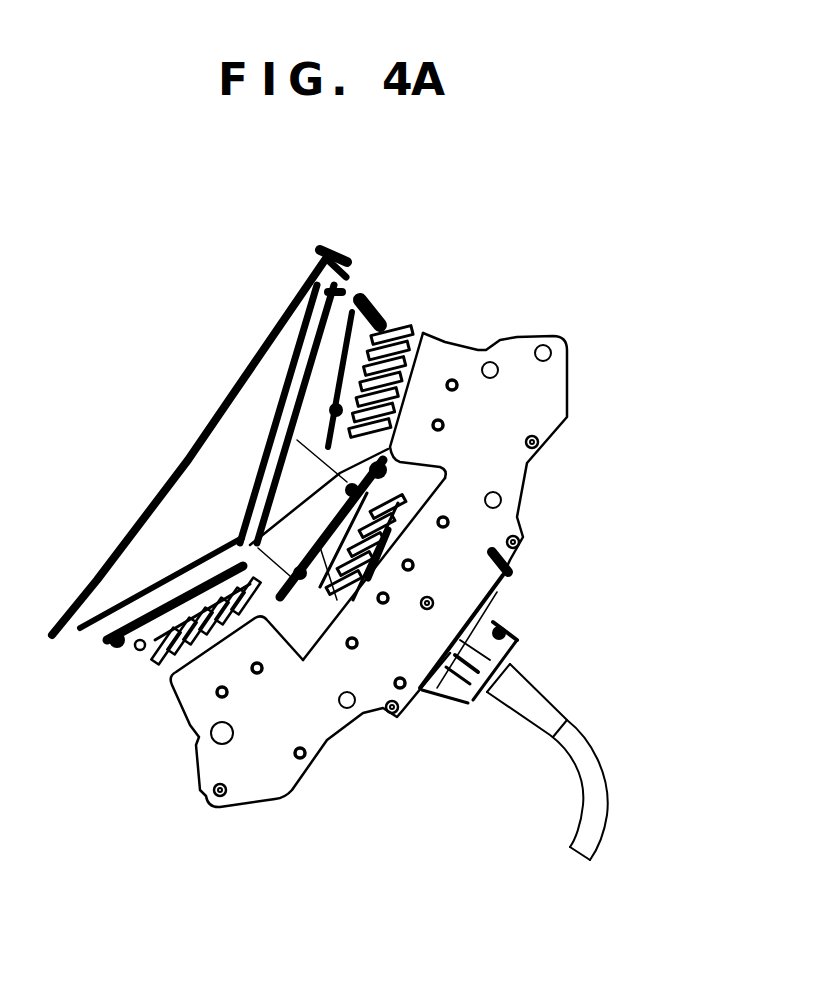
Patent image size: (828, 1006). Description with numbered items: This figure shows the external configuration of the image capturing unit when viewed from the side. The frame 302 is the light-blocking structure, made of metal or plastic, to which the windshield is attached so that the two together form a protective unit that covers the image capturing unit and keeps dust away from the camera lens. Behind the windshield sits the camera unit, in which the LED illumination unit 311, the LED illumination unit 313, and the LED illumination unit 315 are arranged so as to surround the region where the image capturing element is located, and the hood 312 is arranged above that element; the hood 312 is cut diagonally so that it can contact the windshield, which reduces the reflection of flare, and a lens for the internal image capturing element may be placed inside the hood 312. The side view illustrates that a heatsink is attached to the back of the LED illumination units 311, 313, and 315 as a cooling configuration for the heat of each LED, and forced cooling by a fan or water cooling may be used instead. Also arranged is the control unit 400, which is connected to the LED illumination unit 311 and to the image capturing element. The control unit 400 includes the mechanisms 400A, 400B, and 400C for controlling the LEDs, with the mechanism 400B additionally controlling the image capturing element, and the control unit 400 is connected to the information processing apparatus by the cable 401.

The frame 302 is at (230, 467).
The LED illumination unit 311 is at (390, 320).
The hood 312 is at (303, 473).
The LED illumination unit 313 is at (393, 550).
The LED illumination unit 315 is at (130, 640).
The control unit 400 is at (438, 573).
The mechanism for controlling the LEDs 400A is at (500, 420).
The mechanism for controlling the LEDs and the image capturing element 400B is at (452, 593).
The mechanism for controlling the LEDs 400C is at (240, 673).
The cable 401 is at (590, 767).